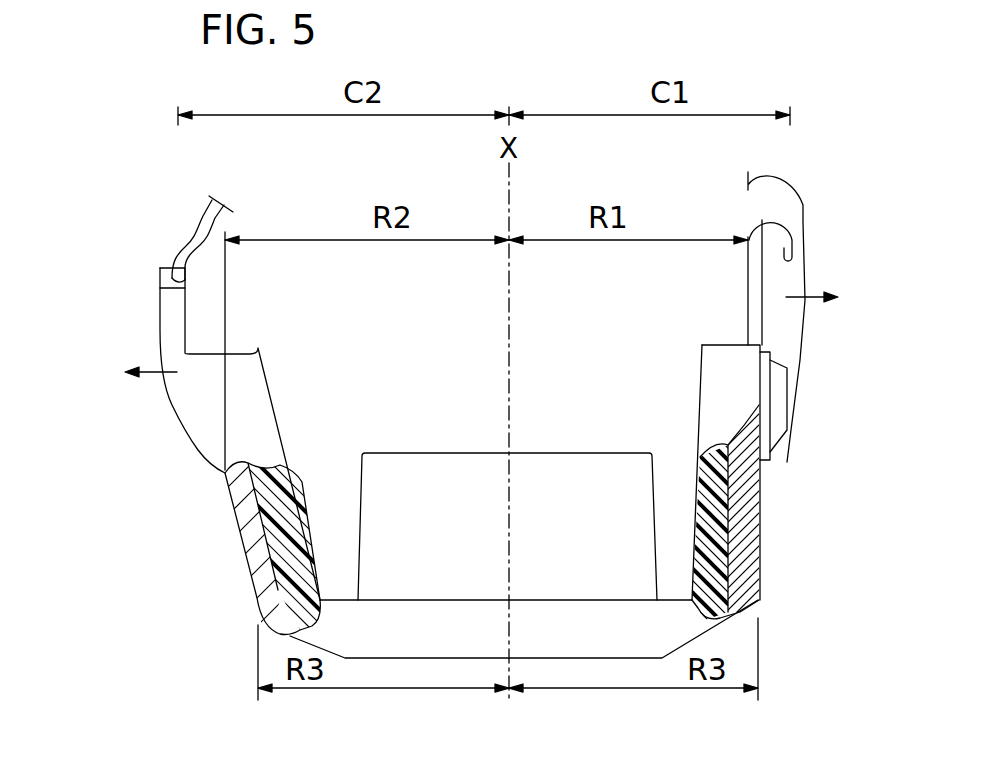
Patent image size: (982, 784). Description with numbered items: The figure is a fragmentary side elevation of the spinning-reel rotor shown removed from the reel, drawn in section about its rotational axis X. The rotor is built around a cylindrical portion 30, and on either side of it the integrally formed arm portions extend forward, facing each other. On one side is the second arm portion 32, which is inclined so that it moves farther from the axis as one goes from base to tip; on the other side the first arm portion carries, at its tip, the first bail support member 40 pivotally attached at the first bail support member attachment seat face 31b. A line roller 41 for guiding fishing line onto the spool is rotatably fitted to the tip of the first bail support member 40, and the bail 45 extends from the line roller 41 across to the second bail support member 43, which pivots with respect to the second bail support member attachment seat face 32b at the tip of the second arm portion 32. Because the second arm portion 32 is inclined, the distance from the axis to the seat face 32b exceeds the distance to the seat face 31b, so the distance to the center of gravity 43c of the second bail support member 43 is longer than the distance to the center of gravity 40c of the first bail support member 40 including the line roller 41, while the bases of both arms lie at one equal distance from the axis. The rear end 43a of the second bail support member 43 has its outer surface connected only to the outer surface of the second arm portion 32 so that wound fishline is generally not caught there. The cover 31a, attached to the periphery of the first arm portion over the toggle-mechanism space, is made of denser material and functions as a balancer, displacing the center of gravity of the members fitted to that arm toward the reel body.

The cylindrical portion 30 is at (395, 467).
The cover 31a is at (750, 503).
The first bail support member attachment seat face 31b is at (770, 405).
The second arm portion 32 is at (255, 597).
The second bail support member attachment seat face 32b is at (225, 402).
The first bail support member 40 is at (788, 322).
The center of gravity of the first bail support member 40c is at (785, 297).
The line roller 41 is at (807, 222).
The second bail support member 43 is at (165, 345).
The rear end of the second bail support member 43a is at (222, 462).
The center of gravity of the second bail support member 43c is at (175, 376).
The bail 45 is at (210, 210).